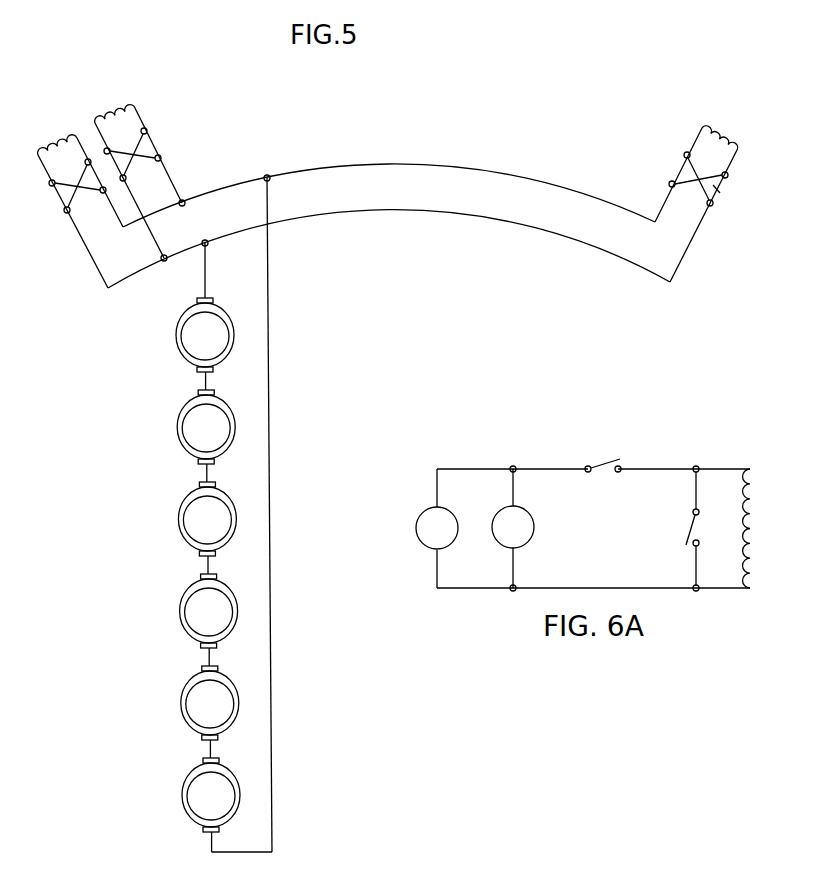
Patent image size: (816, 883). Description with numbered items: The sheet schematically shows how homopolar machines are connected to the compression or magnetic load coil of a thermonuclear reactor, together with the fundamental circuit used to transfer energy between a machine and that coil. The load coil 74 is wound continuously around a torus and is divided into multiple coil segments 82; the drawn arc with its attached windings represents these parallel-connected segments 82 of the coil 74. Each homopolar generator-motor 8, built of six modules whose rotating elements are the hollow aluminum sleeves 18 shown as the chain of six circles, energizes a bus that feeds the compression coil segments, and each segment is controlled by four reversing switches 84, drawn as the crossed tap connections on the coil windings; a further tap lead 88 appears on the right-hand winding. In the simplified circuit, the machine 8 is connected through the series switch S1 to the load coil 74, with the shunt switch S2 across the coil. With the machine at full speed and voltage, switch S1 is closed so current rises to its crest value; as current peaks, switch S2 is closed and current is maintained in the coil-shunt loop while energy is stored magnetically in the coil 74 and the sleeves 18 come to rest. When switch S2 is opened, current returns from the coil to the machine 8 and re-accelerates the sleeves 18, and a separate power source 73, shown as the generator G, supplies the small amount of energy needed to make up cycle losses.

In FIG. 5, the coil segment 82 is at (67, 136).
In FIG. 5, the load coil 74 is at (138, 108).
In FIG. 6A, the load coil 74 is at (756, 520).
In FIG. 5, the reversing switches 84 is at (63, 197).
In FIG. 5, the tap lead 88 is at (713, 185).
In FIG. 5, the homopolar machine 8 is at (238, 515).
In FIG. 6A, the homopolar machine 8 is at (532, 539).
In FIG. 5, the hollow aluminum sleeves 18 is at (178, 341).
In FIG. 6A, the separate power source 73 is at (421, 546).
In FIG. 6A, the series switch S1 is at (608, 462).
In FIG. 6A, the shunt switch S2 is at (692, 531).